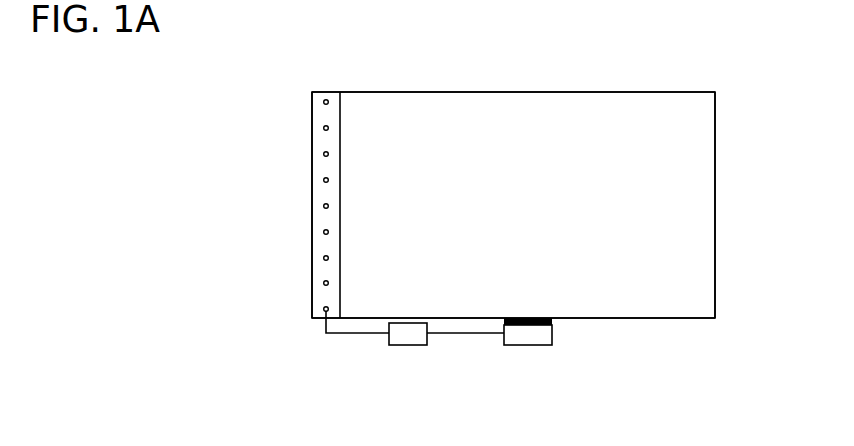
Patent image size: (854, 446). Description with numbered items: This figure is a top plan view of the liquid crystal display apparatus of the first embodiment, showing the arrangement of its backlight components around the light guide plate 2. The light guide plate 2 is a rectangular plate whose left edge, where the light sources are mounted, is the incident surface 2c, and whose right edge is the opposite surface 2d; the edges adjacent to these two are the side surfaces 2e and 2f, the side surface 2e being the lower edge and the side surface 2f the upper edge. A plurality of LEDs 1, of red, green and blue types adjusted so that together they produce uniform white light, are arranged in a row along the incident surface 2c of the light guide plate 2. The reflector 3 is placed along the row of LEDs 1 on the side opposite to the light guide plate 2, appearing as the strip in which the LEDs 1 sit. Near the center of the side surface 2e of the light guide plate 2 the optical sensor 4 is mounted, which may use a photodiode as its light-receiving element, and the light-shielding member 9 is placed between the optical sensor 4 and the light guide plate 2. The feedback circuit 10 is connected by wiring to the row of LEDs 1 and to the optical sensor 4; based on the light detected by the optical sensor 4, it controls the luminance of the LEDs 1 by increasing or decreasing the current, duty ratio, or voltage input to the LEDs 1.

The LEDs 1 is at (326, 316).
The light guide plate 2 is at (715, 282).
The incident surface 2c is at (340, 117).
The opposite surface 2d is at (715, 148).
The side surface 2e is at (687, 319).
The side surface 2f is at (628, 92).
The reflector 3 is at (312, 150).
The optical sensor 4 is at (553, 338).
The light-shielding member 9 is at (555, 322).
The feedback circuit 10 is at (427, 340).